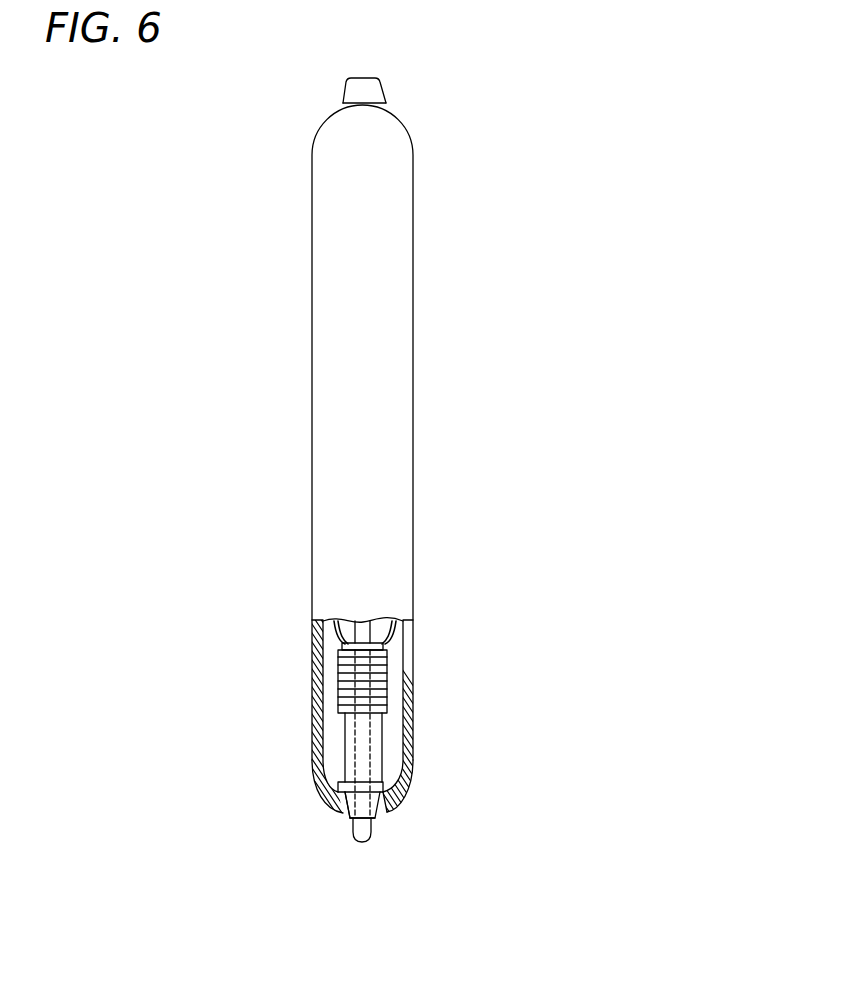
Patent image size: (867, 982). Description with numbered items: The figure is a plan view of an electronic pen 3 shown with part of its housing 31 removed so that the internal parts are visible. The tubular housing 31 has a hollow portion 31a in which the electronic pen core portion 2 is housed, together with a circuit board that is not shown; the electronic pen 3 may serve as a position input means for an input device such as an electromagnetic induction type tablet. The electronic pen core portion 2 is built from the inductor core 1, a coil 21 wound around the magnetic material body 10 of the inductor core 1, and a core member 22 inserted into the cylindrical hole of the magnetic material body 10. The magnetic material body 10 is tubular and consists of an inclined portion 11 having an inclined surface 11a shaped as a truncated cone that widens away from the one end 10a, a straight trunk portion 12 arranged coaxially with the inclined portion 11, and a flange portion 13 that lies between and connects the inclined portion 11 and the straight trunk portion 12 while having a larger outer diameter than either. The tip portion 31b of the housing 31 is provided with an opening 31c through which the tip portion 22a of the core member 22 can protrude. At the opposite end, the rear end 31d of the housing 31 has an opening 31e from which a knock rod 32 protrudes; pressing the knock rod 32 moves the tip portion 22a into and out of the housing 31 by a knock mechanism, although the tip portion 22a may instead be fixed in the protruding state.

The inductor core 1 is at (413, 767).
The electronic pen core portion 2 is at (433, 642).
The electronic pen 3 is at (381, 465).
The magnetic material body 10 is at (389, 749).
The one end 10a is at (350, 818).
The inclined portion 11 is at (342, 810).
The inclined surface 11a is at (342, 812).
The straight trunk portion 12 is at (343, 722).
The flange portion 13 is at (332, 782).
The coil 21 is at (372, 695).
The core member 22 is at (367, 633).
The tip portion of the core member 22a is at (356, 843).
The housing 31 is at (354, 458).
The hollow portion 31a is at (318, 640).
The tip portion of the housing 31b is at (387, 804).
The opening 31c is at (380, 808).
The rear end 31d is at (327, 113).
The opening 31e is at (386, 103).
The knock rod 32 is at (379, 77).